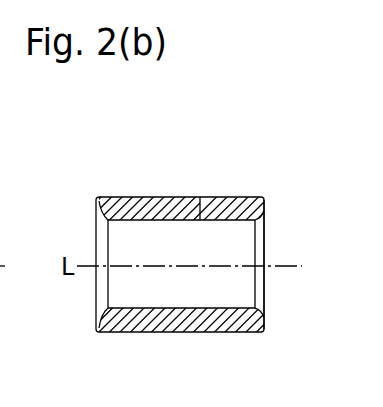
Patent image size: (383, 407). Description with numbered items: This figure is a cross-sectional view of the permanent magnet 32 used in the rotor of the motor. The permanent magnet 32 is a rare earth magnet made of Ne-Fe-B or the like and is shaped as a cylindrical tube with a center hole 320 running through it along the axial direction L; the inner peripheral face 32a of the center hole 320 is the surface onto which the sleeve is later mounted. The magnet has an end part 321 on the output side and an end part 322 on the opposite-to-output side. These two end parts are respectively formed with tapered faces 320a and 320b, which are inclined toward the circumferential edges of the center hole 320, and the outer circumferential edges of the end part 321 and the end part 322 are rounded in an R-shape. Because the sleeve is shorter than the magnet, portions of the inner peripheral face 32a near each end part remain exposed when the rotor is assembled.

The permanent magnet 32 is at (195, 252).
The inner peripheral face 32a is at (181, 332).
The center hole 320 is at (208, 197).
The tapered face 320a is at (117, 198).
The tapered face 320b is at (263, 222).
The end part 321 is at (97, 204).
The end part 322 is at (265, 197).